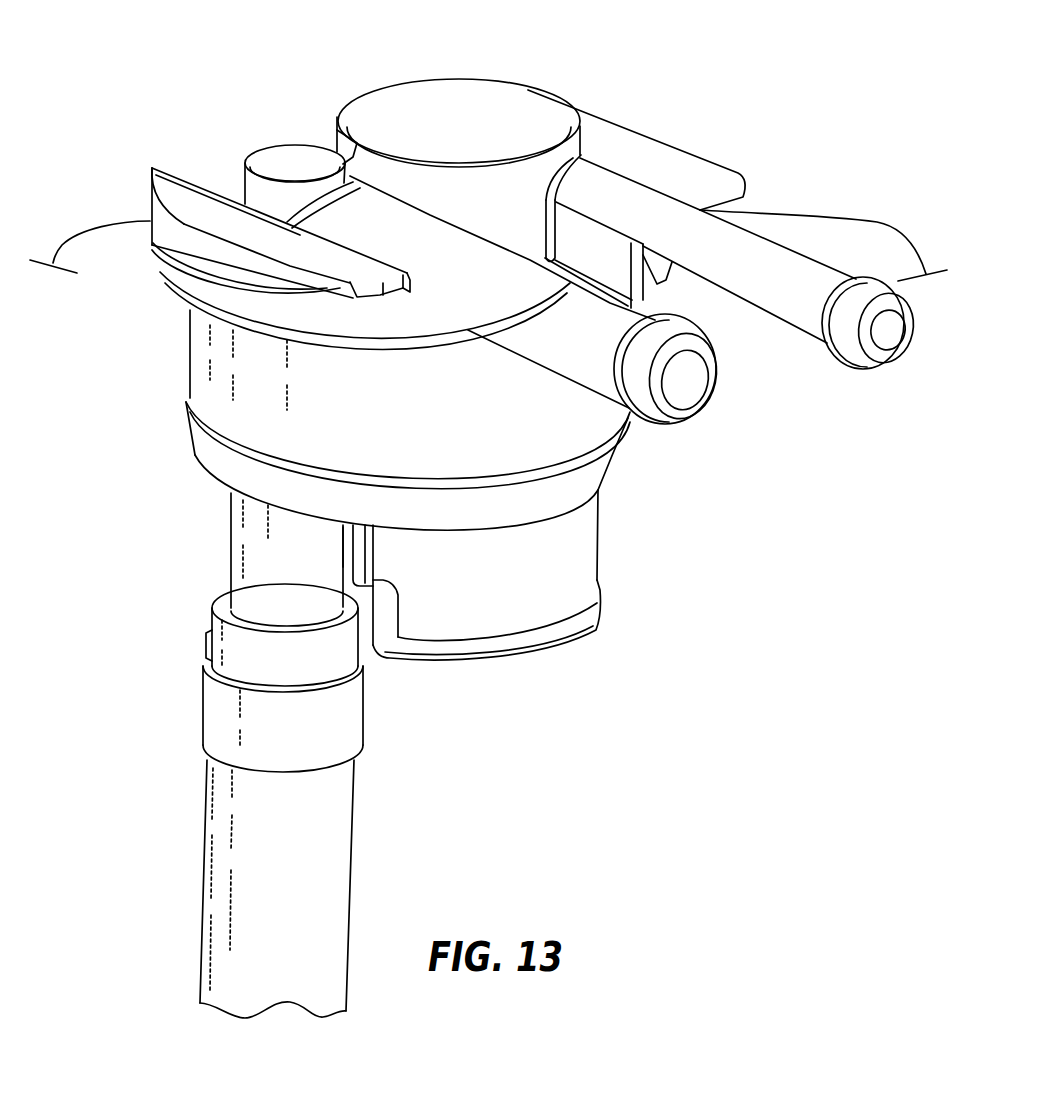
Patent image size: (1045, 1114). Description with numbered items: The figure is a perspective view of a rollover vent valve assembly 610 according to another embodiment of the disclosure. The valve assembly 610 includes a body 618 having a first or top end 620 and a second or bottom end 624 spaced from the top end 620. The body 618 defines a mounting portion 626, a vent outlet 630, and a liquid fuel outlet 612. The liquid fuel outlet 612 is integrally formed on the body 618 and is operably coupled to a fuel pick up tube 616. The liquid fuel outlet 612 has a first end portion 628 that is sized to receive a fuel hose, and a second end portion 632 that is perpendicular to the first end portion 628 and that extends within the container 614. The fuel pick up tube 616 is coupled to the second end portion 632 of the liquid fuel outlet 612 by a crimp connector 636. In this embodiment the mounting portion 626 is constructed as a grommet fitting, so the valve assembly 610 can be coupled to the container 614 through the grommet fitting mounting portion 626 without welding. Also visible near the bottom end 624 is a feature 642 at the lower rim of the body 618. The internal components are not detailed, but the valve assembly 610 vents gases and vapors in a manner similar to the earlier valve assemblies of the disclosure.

The rollover vent valve assembly 610 is at (648, 80).
The liquid fuel outlet 612 is at (560, 345).
The container 614 is at (877, 224).
The fuel pick up tube 616 is at (327, 863).
The body 618 is at (363, 113).
The top end 620 is at (478, 88).
The bottom end 624 is at (476, 678).
The mounting portion 626 is at (214, 206).
The first end portion 628 is at (678, 332).
The vent outlet 630 is at (803, 267).
The second end portion 632 is at (257, 560).
The crimp connector 636 is at (220, 714).
The bottom rim 642 is at (547, 652).